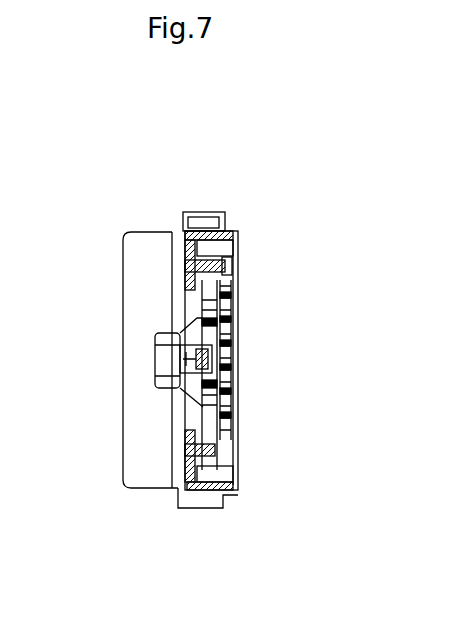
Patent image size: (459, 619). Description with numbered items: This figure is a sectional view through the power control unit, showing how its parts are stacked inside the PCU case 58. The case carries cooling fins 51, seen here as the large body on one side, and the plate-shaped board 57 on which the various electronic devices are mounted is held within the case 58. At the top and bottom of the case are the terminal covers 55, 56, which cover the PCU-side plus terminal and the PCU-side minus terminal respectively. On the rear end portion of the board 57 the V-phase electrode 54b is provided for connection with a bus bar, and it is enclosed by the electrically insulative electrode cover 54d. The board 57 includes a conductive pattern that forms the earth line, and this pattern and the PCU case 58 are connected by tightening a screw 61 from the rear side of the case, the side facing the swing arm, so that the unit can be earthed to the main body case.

The cooling fins 51 is at (140, 484).
The V-phase electrode 54b is at (155, 362).
The electrode cover 54d is at (163, 333).
The terminal cover 55 is at (198, 215).
The terminal cover 56 is at (197, 500).
The board 57 is at (223, 420).
The PCU case 58 is at (185, 243).
The screw 61 is at (232, 266).